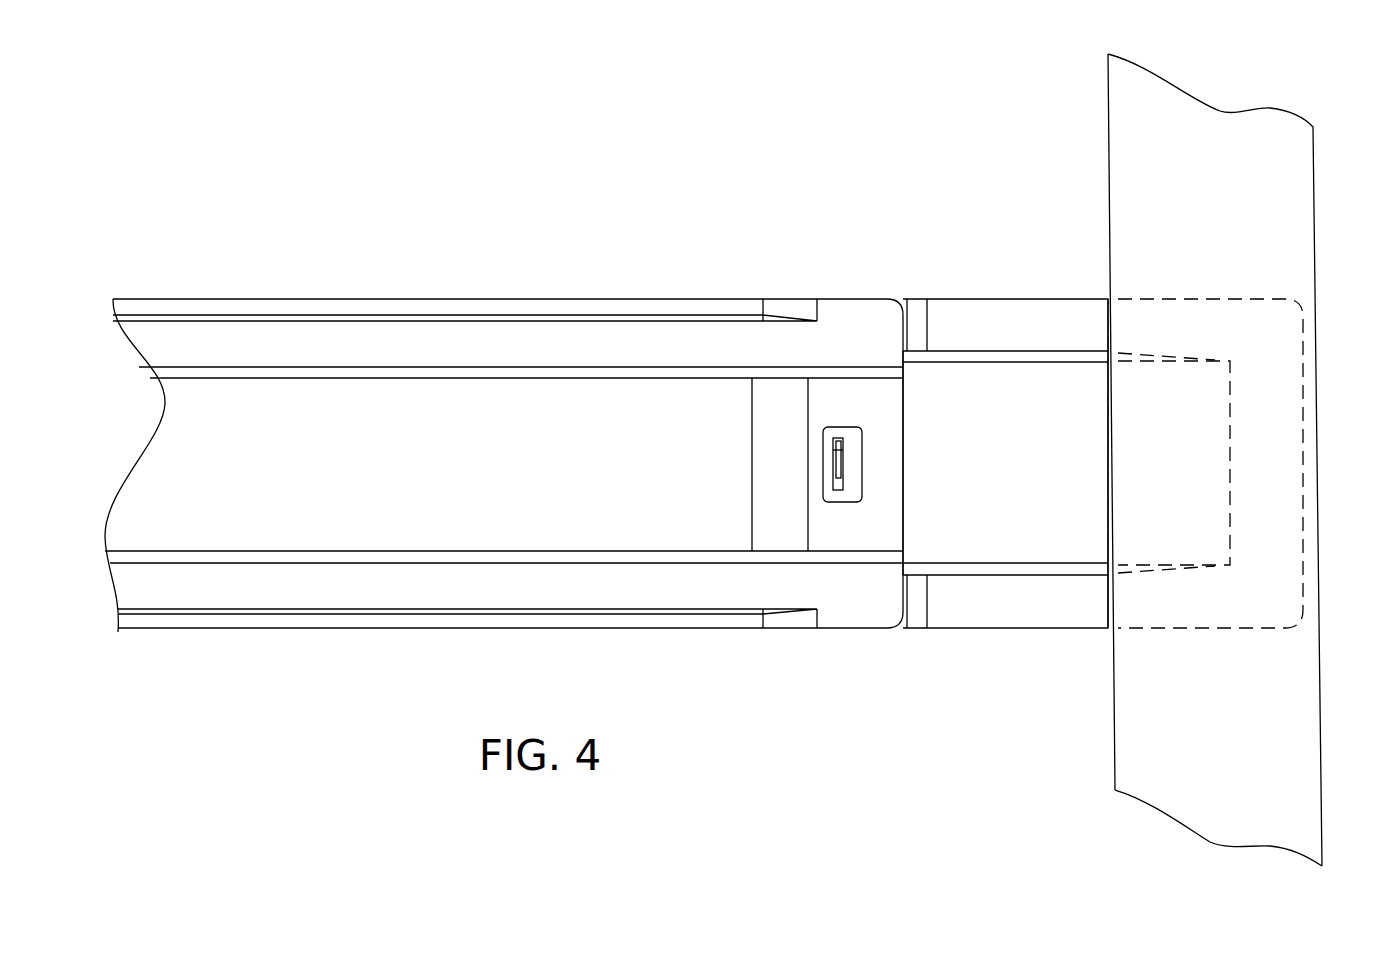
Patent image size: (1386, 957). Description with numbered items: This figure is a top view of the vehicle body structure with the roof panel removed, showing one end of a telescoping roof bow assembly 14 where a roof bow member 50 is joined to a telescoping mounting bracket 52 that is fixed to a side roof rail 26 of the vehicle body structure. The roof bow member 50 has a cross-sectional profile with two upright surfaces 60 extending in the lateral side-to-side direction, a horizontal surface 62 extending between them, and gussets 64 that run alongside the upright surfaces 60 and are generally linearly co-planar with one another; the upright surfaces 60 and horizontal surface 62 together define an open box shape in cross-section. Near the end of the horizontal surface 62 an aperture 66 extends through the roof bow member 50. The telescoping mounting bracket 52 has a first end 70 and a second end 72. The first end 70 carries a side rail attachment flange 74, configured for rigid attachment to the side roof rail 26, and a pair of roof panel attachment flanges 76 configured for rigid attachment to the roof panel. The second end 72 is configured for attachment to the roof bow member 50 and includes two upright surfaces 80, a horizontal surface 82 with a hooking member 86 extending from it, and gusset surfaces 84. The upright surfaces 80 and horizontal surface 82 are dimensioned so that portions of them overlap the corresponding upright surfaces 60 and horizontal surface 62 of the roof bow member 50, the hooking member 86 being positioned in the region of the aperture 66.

The bumper assembly 14 is at (366, 262).
The side roof rail 26 is at (1262, 209).
The roof bow member 50 is at (235, 299).
The telescoping mounting bracket 52 is at (1042, 299).
The upright surfaces 60 is at (179, 372).
The horizontal surface 62 is at (190, 464).
The gussets 64 is at (849, 326).
The aperture 66 is at (861, 463).
The first end 70 is at (1303, 393).
The second end 72 is at (898, 630).
The side rail attachment flange 74 is at (1268, 530).
The roof panel attachment flanges 76 is at (983, 326).
The upright surfaces 80 is at (915, 362).
The horizontal surface 82 is at (1063, 528).
The gusset surfaces 84 is at (903, 310).
The hooking member 86 is at (833, 467).